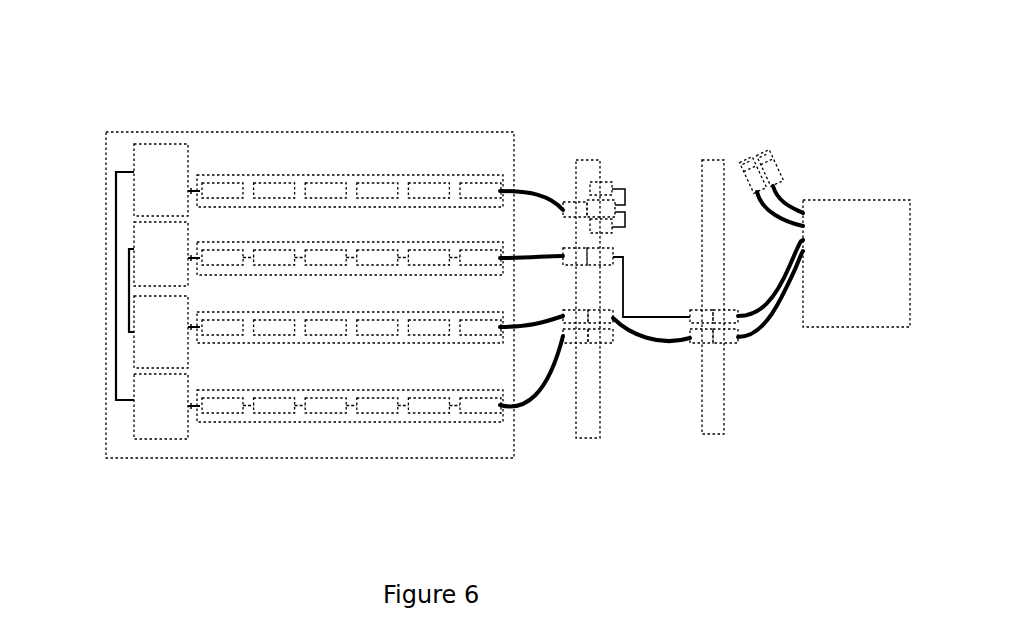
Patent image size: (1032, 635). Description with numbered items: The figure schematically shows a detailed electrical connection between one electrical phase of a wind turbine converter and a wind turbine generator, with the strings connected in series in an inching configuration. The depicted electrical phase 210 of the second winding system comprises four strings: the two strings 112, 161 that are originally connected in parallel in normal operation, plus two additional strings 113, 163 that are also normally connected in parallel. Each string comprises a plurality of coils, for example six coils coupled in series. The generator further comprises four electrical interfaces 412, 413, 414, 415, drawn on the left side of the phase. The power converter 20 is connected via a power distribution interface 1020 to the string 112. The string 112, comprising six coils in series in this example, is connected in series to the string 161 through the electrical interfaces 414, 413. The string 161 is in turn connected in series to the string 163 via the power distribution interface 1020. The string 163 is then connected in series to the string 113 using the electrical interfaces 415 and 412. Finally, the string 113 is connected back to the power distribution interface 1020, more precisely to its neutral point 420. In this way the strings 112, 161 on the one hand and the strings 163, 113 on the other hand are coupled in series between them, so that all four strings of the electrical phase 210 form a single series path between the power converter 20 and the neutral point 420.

The electrical phase 210 is at (114, 132).
The electrical interface 412 is at (145, 157).
The electrical interface 413 is at (147, 232).
The electrical interface 414 is at (148, 305).
The electrical interface 415 is at (148, 385).
The string 113 is at (246, 184).
The string 161 is at (248, 251).
The string 112 is at (248, 319).
The string 163 is at (248, 397).
The neutral point 420 is at (620, 186).
The power distribution interface 1020 is at (658, 432).
The power converter 20 is at (848, 200).